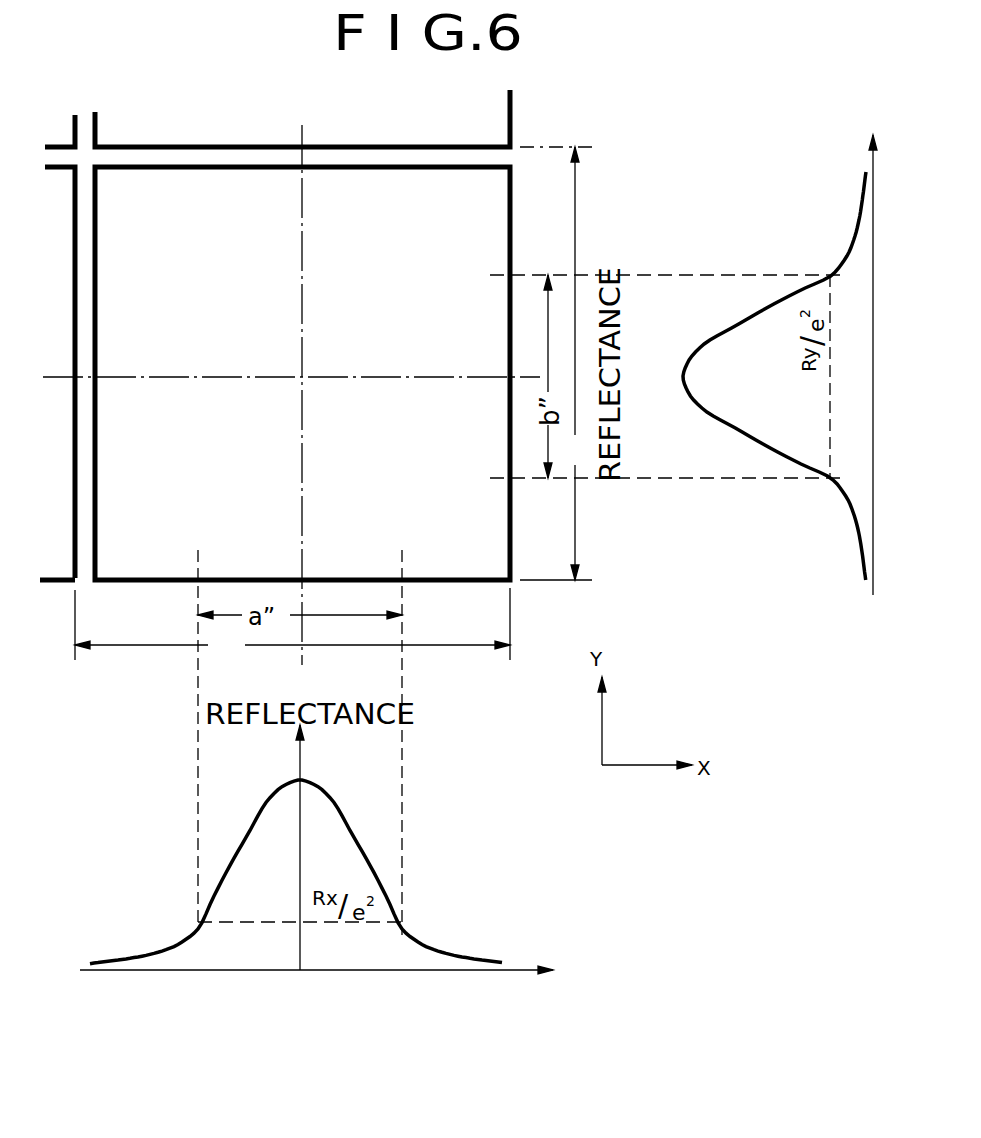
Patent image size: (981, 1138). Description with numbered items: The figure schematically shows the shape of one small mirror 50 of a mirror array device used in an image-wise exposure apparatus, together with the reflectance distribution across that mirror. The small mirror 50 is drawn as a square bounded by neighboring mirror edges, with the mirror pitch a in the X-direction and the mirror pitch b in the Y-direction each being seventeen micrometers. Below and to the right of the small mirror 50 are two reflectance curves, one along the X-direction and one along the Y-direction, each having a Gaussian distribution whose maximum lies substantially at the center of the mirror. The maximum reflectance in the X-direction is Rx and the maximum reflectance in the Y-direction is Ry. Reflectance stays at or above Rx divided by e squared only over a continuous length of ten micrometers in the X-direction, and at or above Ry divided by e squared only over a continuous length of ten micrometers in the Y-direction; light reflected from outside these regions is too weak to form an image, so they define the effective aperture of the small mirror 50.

The small mirror 50 is at (178, 185).
The mirror pitch in the X-direction a is at (292, 624).
The mirror pitch in the Y-direction b is at (556, 363).
The maximum reflectance in the X-direction Rx is at (296, 862).
The maximum reflectance in the Y-direction Ry is at (873, 377).